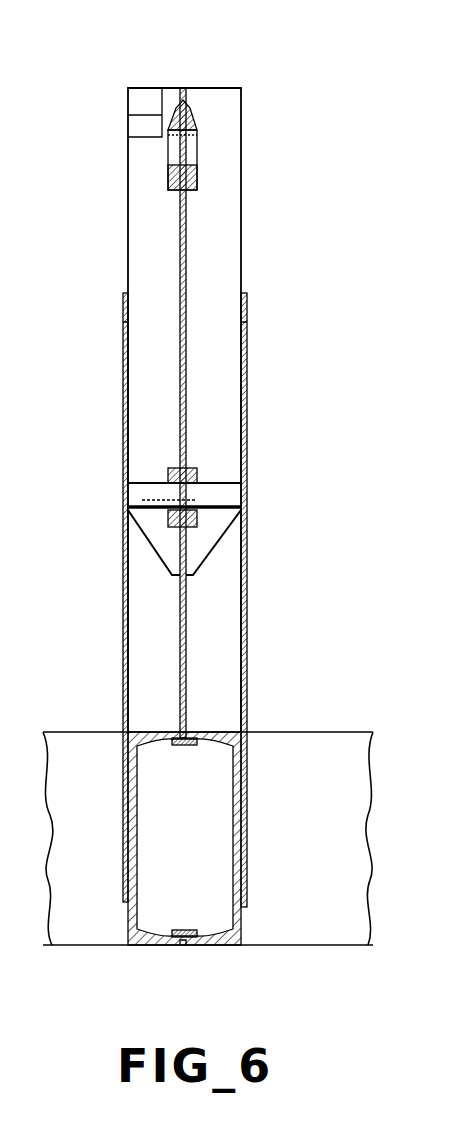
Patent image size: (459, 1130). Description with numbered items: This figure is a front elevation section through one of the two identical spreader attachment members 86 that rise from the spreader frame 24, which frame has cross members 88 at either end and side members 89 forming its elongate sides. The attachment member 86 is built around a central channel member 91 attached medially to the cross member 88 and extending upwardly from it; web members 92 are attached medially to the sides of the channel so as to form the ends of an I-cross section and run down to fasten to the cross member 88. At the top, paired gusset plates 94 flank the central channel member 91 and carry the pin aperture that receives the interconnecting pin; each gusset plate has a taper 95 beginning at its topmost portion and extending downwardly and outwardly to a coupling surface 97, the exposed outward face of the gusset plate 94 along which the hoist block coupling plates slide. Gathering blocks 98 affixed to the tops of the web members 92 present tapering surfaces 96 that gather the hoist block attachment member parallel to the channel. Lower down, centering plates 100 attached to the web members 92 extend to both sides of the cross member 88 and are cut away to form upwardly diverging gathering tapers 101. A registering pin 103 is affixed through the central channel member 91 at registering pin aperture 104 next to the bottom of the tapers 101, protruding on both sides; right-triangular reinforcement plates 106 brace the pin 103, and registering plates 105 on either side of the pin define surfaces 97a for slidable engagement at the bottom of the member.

The spreader frame 24 is at (313, 950).
The spreader attachment member 86 is at (118, 212).
The cross member 88 is at (138, 826).
The side member 89 is at (353, 815).
The central channel member 91 is at (186, 230).
The web member 92 is at (228, 275).
The gusset plate 94 is at (208, 121).
The gusset plate taper 95 is at (194, 127).
The tapering surface 96 is at (143, 92).
The coupling surface 97 is at (197, 134).
The slidable engagement surface 97a is at (197, 519).
The gathering block 98 is at (118, 115).
The centering plate 100 is at (123, 633).
The gathering taper 101 is at (122, 384).
The registering pin 103 is at (128, 497).
The registering pin aperture 104 is at (205, 472).
The registering plate 105 is at (150, 464).
The reinforcement plate 106 is at (152, 535).